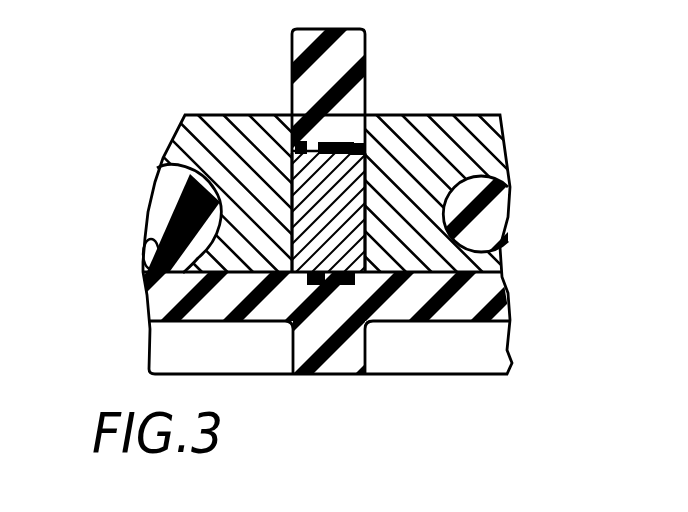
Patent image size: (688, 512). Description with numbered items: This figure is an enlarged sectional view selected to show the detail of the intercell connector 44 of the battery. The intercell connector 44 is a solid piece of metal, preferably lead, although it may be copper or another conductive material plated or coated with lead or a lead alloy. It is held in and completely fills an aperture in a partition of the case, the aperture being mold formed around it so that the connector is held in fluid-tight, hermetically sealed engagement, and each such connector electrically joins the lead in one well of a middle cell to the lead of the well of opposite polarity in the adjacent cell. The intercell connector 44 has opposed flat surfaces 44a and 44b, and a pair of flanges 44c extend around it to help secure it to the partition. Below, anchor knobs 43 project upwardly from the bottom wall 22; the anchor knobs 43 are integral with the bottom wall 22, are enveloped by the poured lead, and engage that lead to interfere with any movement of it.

The bottom wall 22 is at (443, 312).
The anchor knobs 43 is at (184, 211).
The intercell connector 44 is at (347, 152).
The flat surface 44a is at (291, 213).
The flat surface 44b is at (367, 182).
The flanges 44c is at (320, 150).